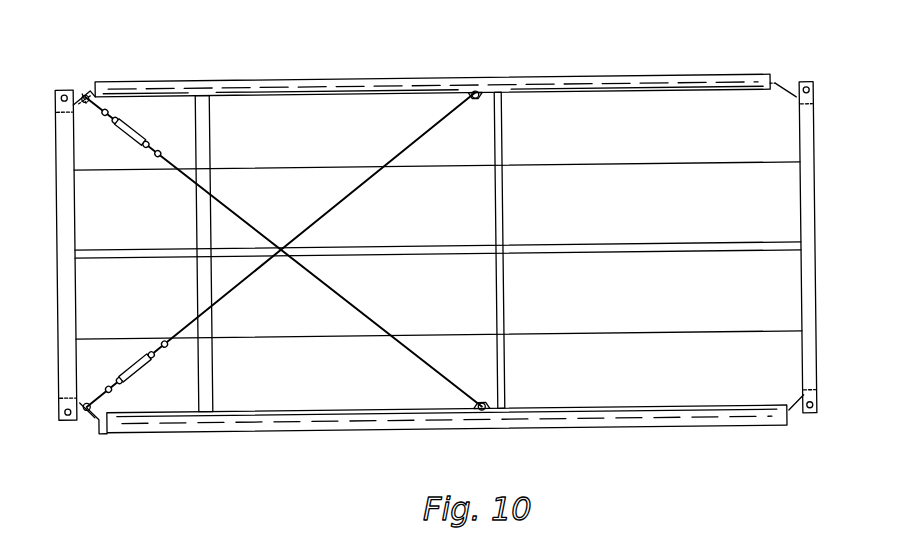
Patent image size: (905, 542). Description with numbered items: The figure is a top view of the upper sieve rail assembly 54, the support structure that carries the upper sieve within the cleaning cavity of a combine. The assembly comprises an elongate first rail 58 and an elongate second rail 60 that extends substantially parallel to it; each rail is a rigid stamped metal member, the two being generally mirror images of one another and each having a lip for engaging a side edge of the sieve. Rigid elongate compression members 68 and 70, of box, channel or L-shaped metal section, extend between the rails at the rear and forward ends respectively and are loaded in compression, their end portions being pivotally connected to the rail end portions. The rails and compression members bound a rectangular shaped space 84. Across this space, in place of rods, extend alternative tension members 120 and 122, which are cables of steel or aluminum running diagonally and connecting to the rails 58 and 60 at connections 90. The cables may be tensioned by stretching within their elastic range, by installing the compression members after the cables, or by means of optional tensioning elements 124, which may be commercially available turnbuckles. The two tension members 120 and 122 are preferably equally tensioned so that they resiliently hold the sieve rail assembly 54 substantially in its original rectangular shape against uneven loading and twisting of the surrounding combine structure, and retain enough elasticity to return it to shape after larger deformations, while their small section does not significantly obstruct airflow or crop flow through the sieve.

The upper sieve rail assembly 54 is at (252, 437).
The first rail 58 is at (100, 432).
The second rail 60 is at (82, 88).
The compression member 68 is at (815, 227).
The compression member 70 is at (57, 255).
The rectangular shaped space 84 is at (407, 388).
The connections 90 is at (80, 100).
The tension member 120 is at (345, 303).
The tension member 122 is at (347, 204).
The tensioning element 124 is at (137, 132).